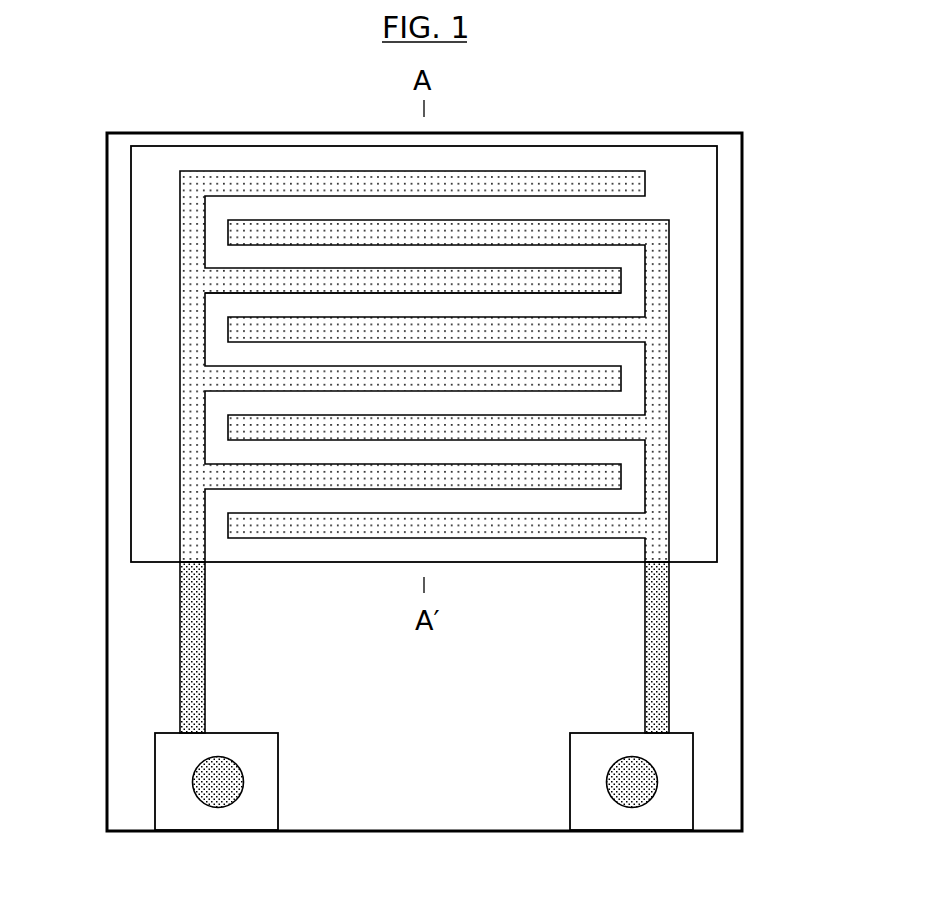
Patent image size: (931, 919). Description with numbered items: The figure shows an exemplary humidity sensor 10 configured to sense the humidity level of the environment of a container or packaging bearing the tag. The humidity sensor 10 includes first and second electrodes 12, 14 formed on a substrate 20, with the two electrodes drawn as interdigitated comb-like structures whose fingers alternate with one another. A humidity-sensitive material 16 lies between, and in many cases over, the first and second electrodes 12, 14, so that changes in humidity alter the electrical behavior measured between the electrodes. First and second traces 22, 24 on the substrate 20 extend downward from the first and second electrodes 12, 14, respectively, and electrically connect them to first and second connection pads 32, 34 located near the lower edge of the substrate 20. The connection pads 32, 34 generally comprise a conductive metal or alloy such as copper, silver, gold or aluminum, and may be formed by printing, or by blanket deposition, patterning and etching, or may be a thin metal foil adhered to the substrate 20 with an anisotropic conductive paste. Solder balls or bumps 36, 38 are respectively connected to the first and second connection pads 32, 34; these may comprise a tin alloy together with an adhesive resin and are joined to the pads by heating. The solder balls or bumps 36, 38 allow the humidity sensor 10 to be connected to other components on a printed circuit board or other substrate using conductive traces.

The humidity sensor 10 is at (700, 375).
The first electrode 12 is at (195, 372).
The second electrode 14 is at (662, 283).
The humidity-sensitive material 16 is at (242, 307).
The substrate 20 is at (438, 697).
The first trace 22 is at (192, 638).
The second trace 24 is at (657, 655).
The first connection pad 32 is at (262, 771).
The second connection pad 34 is at (583, 773).
The solder ball or bump 36 is at (217, 793).
The solder ball or bump 38 is at (635, 792).